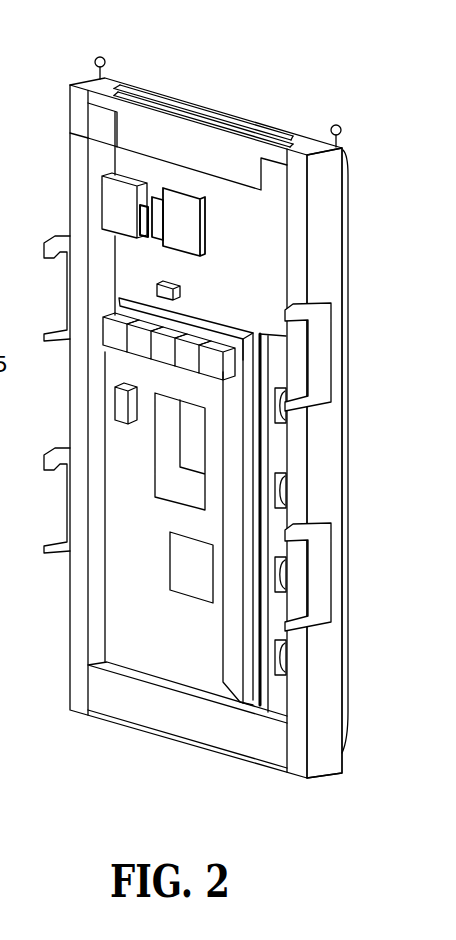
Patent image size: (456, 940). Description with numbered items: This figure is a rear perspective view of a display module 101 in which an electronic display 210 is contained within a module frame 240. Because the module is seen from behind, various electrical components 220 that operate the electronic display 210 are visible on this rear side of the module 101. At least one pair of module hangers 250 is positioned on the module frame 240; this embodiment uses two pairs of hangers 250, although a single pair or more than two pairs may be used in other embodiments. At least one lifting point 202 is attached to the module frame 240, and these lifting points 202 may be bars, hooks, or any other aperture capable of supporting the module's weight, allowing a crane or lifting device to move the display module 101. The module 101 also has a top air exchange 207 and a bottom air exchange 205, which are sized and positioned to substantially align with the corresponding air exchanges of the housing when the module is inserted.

The display module 101 is at (259, 76).
The lifting point 202 is at (106, 56).
The bottom air exchange 205 is at (177, 748).
The top air exchange 207 is at (221, 116).
The electronic display 210 is at (350, 172).
The electrical components 220 is at (133, 214).
The module frame 240 is at (324, 685).
The module hangers 250 is at (42, 247).